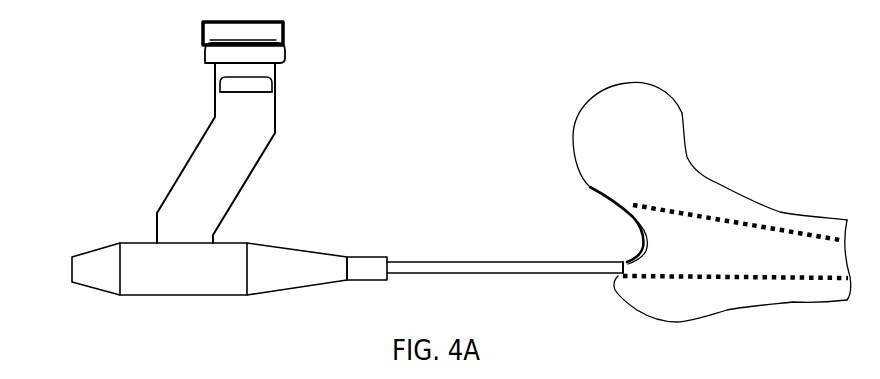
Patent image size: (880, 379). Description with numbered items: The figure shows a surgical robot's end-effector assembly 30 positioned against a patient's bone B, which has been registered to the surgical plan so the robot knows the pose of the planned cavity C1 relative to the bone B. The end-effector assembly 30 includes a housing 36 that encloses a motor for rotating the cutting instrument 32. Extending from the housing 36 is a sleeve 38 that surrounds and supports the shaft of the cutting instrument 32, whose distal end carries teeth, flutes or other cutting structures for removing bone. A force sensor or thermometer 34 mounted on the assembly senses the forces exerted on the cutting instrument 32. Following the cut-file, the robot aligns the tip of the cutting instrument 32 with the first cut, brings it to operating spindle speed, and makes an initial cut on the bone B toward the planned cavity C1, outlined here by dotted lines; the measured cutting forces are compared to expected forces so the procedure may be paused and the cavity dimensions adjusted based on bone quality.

The end-effector assembly 30 is at (80, 145).
The cutting instrument 32 is at (626, 273).
The force sensor or thermometer 34 is at (204, 41).
The housing 36 is at (134, 243).
The sleeve 38 is at (433, 262).
The bone B is at (680, 112).
The planned cavity C1 is at (685, 217).